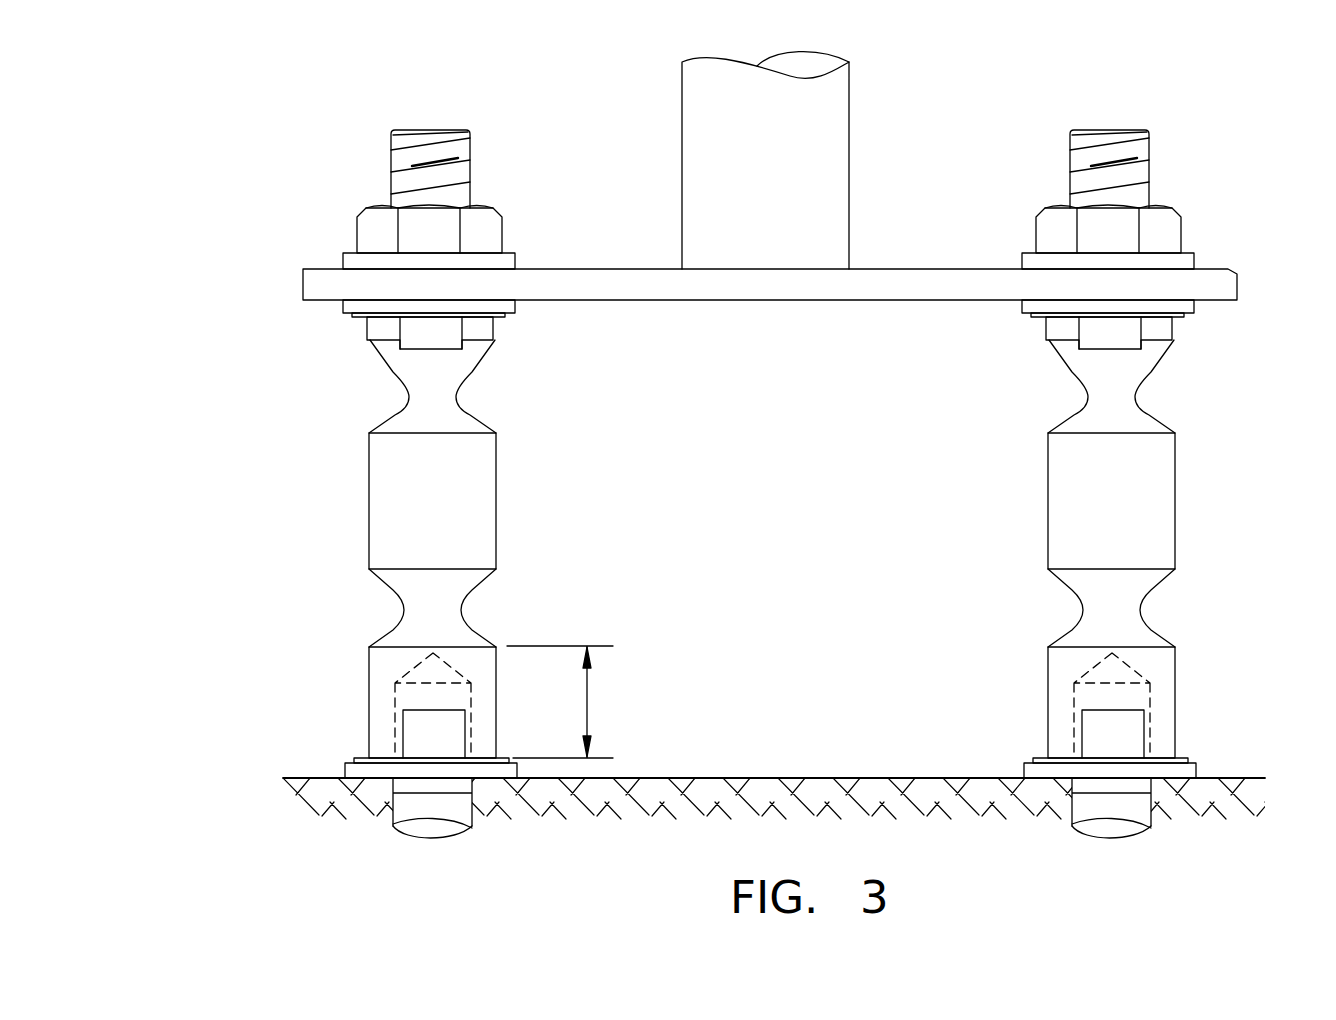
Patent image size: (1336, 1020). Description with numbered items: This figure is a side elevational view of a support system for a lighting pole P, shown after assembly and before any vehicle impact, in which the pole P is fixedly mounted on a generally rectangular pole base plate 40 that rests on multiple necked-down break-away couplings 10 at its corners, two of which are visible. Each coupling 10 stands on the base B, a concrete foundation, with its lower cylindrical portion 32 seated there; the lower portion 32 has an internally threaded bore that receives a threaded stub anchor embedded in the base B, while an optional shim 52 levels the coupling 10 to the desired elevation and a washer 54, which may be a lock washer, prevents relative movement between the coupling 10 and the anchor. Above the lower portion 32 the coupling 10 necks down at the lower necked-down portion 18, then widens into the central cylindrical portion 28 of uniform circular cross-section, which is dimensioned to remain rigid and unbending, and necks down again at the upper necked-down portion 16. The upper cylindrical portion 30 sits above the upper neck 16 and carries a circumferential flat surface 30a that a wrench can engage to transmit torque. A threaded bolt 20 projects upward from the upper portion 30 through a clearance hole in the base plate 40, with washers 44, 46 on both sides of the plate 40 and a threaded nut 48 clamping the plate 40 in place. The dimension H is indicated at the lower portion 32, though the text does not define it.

The multiple necked-down break-away coupling 10 is at (295, 445).
The upper necked-down portion 16 is at (363, 383).
The lower necked-down portion 18 is at (383, 605).
The threaded bolt 20 is at (395, 162).
The central cylindrical portion 28 is at (380, 505).
The upper cylindrical portion 30 is at (487, 331).
The circumferential flat surface 30a is at (437, 345).
The lower cylindrical portion 32 is at (485, 682).
The pole base plate 40 is at (313, 288).
The washer 44 is at (348, 306).
The washer 46 is at (352, 263).
The threaded nut 48 is at (373, 228).
The shim 52 is at (498, 758).
The washer 54 is at (357, 772).
The height dimension H is at (590, 700).
The base B is at (708, 792).
The pole P is at (835, 122).